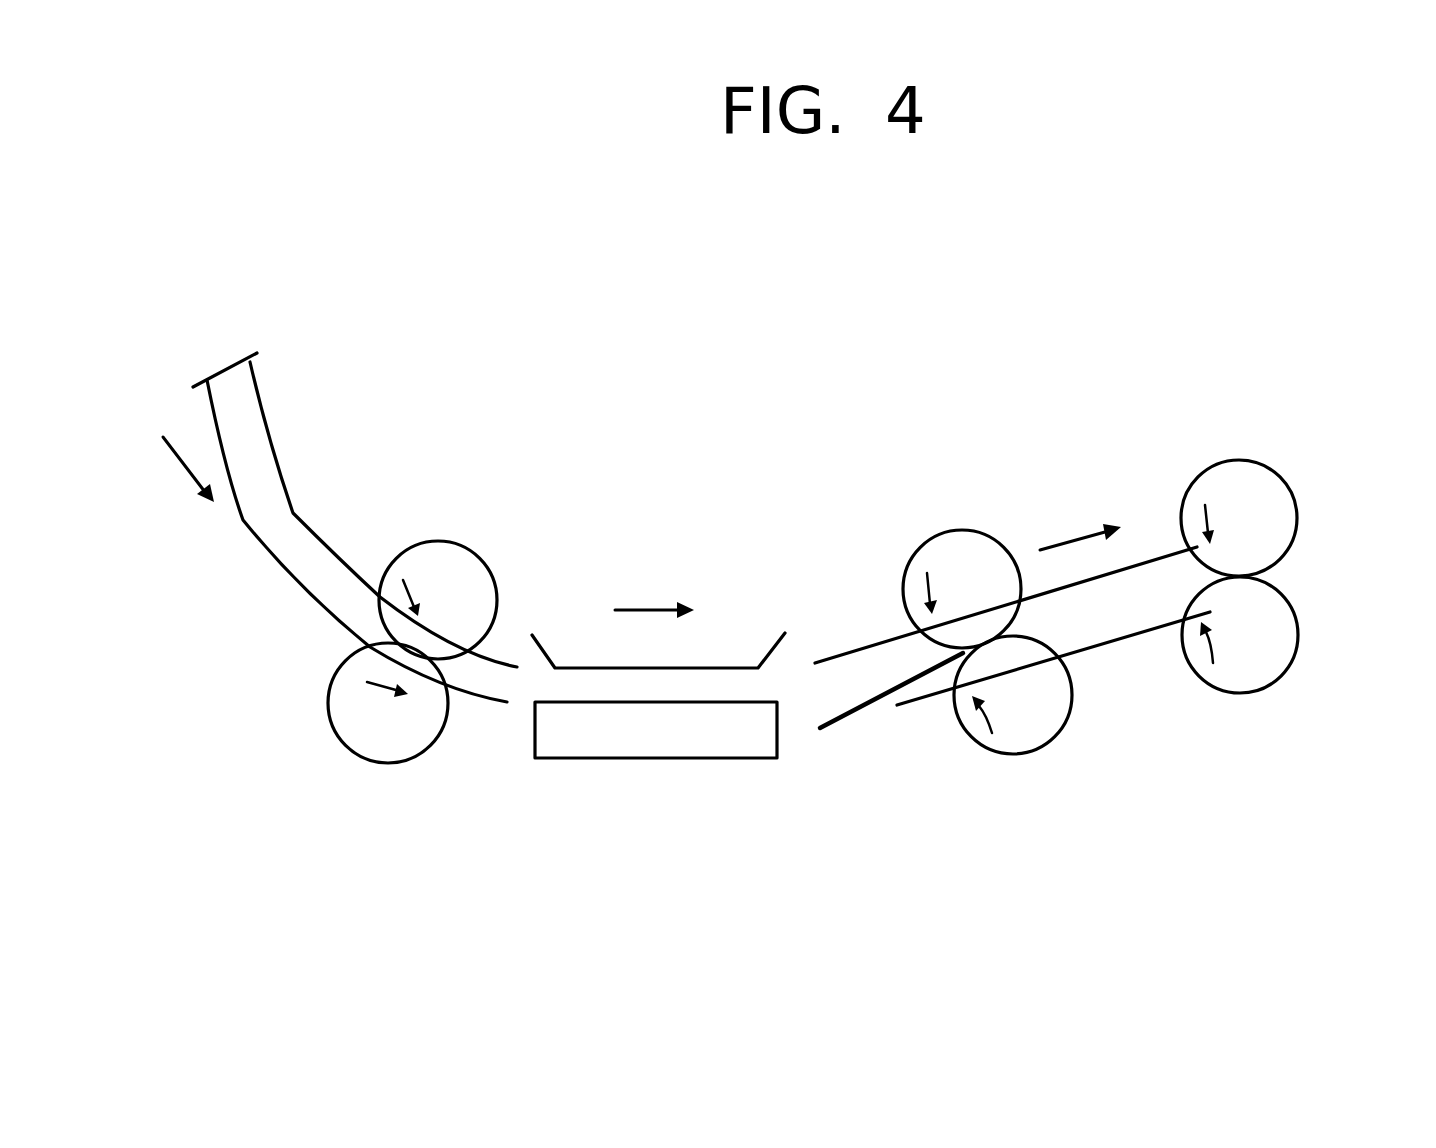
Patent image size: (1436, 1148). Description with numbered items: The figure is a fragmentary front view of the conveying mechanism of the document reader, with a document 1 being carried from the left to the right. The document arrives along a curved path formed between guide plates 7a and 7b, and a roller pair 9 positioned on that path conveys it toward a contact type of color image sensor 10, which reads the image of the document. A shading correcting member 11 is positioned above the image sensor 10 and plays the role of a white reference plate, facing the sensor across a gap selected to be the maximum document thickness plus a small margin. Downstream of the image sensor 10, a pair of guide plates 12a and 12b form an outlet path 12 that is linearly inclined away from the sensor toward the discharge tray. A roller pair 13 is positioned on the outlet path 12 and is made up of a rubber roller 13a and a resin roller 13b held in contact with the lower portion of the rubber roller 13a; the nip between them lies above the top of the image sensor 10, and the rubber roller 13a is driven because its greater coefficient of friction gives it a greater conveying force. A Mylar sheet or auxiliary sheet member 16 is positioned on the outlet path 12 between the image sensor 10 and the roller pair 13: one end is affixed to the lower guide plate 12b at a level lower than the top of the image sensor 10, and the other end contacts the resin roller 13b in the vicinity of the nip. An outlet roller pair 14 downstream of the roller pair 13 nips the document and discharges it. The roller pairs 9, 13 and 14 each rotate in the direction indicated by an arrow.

The sheet 1 is at (290, 513).
The guide plate 7a is at (243, 520).
The guide plate 7b is at (253, 387).
The roller pair 9 is at (455, 650).
The color image sensor 10 is at (647, 757).
The shading correcting member 11 is at (735, 666).
The outlet path 12 is at (1024, 626).
The guide plate 12a is at (1142, 557).
The guide plate 12b is at (1147, 633).
The roller pair 13 is at (937, 638).
The rubber roller 13a is at (930, 568).
The resin roller 13b is at (997, 753).
The outlet roller pair 14 is at (1280, 533).
The Mylar sheet 16 is at (903, 697).